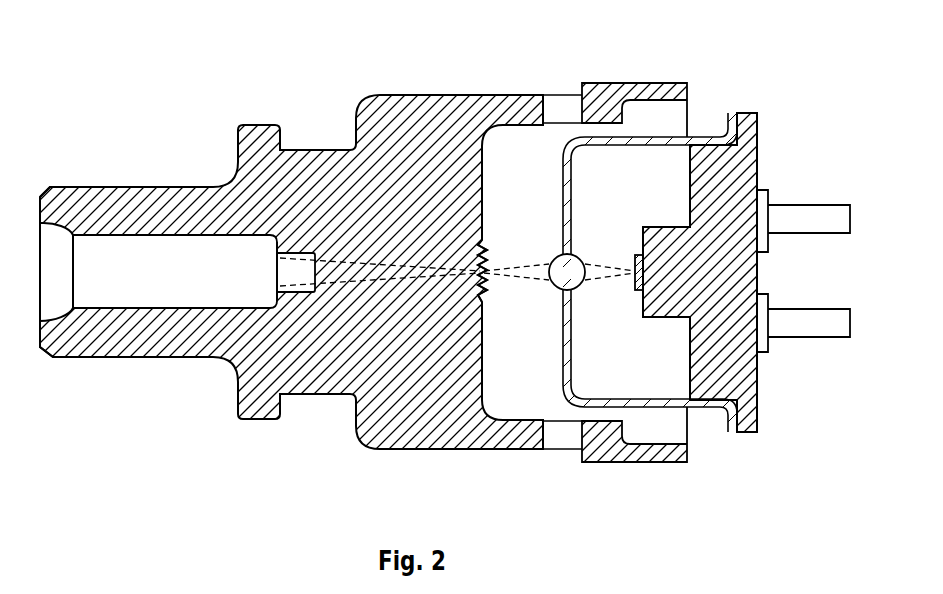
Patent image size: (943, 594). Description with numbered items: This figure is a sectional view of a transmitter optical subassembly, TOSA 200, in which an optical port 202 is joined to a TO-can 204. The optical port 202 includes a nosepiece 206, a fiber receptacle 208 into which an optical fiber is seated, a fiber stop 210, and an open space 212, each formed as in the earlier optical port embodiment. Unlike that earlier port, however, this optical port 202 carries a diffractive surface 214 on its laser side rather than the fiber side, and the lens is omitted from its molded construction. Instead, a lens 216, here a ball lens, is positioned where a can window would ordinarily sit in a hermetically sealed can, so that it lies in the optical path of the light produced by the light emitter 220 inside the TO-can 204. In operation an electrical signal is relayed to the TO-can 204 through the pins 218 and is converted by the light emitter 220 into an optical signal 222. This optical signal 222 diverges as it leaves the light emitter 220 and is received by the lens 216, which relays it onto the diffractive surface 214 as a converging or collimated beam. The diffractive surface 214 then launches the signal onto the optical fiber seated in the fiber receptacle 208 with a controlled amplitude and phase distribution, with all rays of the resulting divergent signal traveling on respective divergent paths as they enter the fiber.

The TOSA 200 is at (147, 157).
The optical port 202 is at (328, 150).
The TO-can 204 is at (623, 140).
The nosepiece 206 is at (80, 337).
The fiber receptacle 208 is at (177, 272).
The fiber stop 210 is at (277, 270).
The open space 212 is at (296, 275).
The diffractive surface 214 is at (478, 285).
The lens 216 is at (583, 258).
The pins 218 is at (807, 204).
The light emitter 220 is at (633, 286).
The optical signal 222 is at (688, 117).